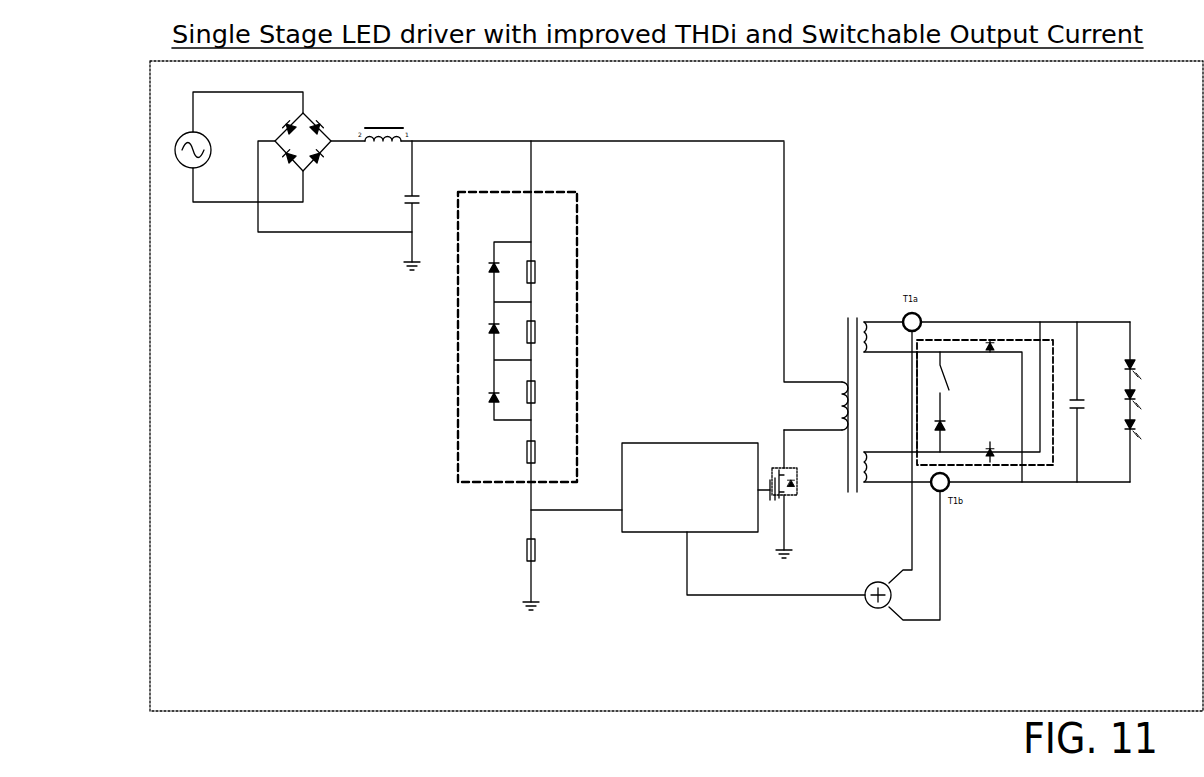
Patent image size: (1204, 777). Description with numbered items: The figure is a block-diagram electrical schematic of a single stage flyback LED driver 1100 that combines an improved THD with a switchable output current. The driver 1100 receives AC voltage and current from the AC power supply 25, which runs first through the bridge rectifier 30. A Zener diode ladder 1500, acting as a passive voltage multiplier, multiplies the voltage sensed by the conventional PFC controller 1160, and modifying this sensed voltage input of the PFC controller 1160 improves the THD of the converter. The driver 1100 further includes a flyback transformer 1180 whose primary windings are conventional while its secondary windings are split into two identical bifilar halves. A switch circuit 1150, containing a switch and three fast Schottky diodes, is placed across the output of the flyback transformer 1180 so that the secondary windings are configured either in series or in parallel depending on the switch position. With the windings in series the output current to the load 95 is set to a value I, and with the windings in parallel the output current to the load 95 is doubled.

The single stage flyback LED driver 1100 is at (1050, 147).
The AC power supply 25 is at (185, 170).
The bridge rectifier 30 is at (305, 113).
The Zener diode ladder 1500 is at (458, 446).
The PFC controller 1160 is at (677, 443).
The flyback transformer 1180 is at (893, 316).
The switch circuit 1150 is at (1040, 465).
The load 95 is at (1145, 400).